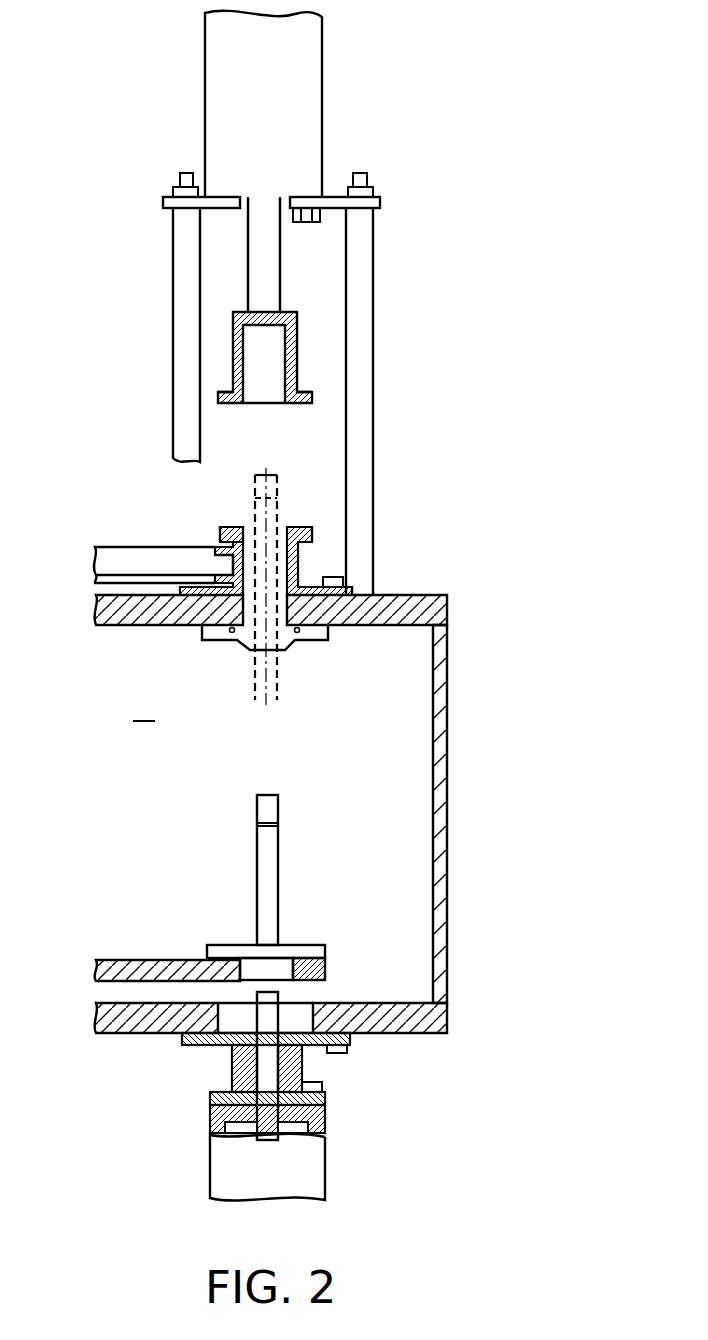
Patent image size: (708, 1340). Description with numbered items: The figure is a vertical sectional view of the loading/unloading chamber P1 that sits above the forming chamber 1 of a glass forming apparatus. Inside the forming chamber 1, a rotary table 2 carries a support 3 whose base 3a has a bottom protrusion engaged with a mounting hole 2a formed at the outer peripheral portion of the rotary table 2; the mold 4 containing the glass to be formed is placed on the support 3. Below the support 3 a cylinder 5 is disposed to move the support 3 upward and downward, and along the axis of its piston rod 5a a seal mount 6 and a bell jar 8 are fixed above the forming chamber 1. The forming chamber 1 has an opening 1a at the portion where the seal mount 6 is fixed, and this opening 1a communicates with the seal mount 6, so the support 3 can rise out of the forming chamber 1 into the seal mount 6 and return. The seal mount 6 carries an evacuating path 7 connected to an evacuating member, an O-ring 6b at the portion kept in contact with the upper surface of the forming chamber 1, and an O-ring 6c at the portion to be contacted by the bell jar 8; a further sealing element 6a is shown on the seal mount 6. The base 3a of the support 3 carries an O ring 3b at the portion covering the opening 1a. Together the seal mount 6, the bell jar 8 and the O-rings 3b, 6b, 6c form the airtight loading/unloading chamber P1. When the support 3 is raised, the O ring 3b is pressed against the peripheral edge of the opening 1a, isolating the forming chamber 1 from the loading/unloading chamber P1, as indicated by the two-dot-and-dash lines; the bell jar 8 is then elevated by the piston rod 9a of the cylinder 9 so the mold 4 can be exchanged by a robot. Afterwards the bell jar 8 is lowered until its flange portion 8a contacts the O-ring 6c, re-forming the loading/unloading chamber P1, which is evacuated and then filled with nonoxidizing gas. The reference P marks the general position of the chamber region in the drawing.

The forming chamber 1 is at (447, 683).
The opening 1a is at (242, 612).
The rotary table 2 is at (123, 965).
The mounting hole 2a is at (278, 970).
The support 3 is at (278, 857).
The base 3a is at (258, 636).
The O ring 3b is at (297, 638).
The mold 4 is at (277, 488).
The cylinder 5 is at (328, 1157).
The piston rod 5a is at (282, 1018).
The seal mount 6 is at (298, 557).
The left flange of bearing housing 6a is at (222, 530).
The O-ring 6b is at (317, 597).
The O-ring 6c is at (312, 535).
The evacuating path 7 is at (112, 557).
The bell jar 8 is at (297, 333).
The flange portion 8a is at (312, 395).
The cylinder 9 is at (322, 97).
The piston rod 9a is at (282, 252).
The position P is at (144, 709).
The loading/unloading chamber P1 is at (263, 390).